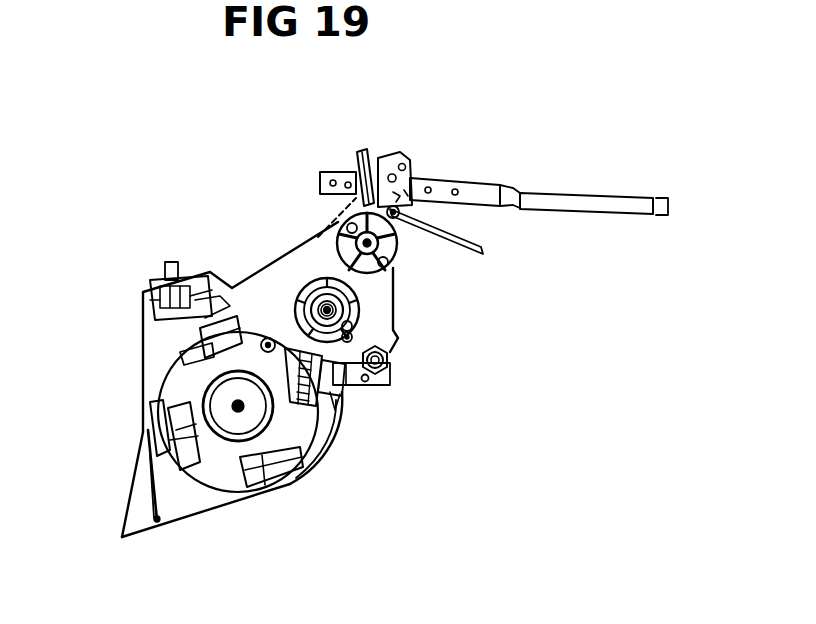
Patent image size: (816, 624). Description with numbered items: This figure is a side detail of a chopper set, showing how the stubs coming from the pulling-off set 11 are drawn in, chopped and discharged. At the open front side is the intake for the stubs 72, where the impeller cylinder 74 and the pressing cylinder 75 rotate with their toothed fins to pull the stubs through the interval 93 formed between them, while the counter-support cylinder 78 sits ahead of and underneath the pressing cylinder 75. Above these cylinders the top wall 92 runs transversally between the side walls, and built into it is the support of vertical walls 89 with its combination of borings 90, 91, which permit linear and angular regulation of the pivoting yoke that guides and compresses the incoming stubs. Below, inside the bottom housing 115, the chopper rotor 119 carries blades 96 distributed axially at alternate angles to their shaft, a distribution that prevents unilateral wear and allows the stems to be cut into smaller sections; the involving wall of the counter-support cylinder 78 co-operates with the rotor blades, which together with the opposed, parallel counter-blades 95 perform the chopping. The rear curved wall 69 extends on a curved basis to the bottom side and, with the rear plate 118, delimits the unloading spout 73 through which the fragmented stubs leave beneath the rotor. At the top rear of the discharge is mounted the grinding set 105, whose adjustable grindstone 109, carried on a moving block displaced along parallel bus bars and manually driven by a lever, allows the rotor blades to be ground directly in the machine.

The pulling-off set 11 is at (590, 148).
The rear curved wall 69 is at (312, 472).
The intake for the stubs 72 is at (373, 307).
The unloading spout 73 is at (140, 510).
The impeller cylinder 74 is at (393, 263).
The pressing cylinder 75 is at (320, 302).
The counter-support cylinder 78 is at (390, 368).
The support of vertical walls 89 is at (412, 176).
The boring 90 is at (360, 167).
The boring 91 is at (405, 160).
The top wall 92 is at (326, 240).
The interval 93 is at (337, 282).
The counter-blades 95 is at (345, 367).
The blades 96 is at (265, 487).
The grinding set 105 is at (165, 293).
The adjustable grindstone 109 is at (162, 333).
The bottom housing 115 is at (328, 458).
The rear plate 118 is at (146, 420).
The chopper rotor 119 is at (305, 428).